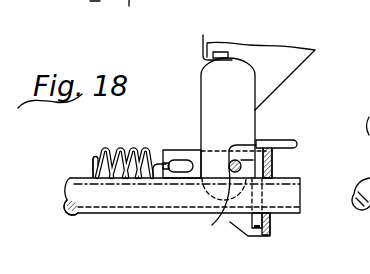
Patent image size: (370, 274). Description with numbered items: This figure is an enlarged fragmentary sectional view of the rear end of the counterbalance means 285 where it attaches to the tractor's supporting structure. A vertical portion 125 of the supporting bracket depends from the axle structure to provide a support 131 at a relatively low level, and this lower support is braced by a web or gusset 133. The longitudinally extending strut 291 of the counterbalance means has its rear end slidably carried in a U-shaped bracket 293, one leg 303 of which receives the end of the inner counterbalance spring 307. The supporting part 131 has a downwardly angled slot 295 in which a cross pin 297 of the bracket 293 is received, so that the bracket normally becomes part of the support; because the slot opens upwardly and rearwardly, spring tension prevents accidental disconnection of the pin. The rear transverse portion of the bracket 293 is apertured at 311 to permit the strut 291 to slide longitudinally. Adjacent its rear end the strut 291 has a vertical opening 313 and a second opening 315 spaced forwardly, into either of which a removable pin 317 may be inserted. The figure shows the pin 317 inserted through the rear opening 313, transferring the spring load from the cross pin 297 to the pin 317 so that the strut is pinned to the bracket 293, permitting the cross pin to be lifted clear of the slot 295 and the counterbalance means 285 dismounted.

The vertical portion 125 is at (203, 35).
The support 131 is at (201, 93).
The gusset 133 is at (305, 34).
The counterbalance means 285 is at (69, 161).
The strut 291 is at (100, 214).
The bracket 293 is at (258, 237).
The slot 295 is at (245, 143).
The cross pin 297 is at (210, 225).
The leg 303 is at (190, 137).
The inner counterbalance spring 307 is at (134, 130).
The aperture 311 is at (271, 180).
The vertical opening 313 is at (273, 217).
The second opening 315 is at (80, 222).
The removable pin 317 is at (298, 142).